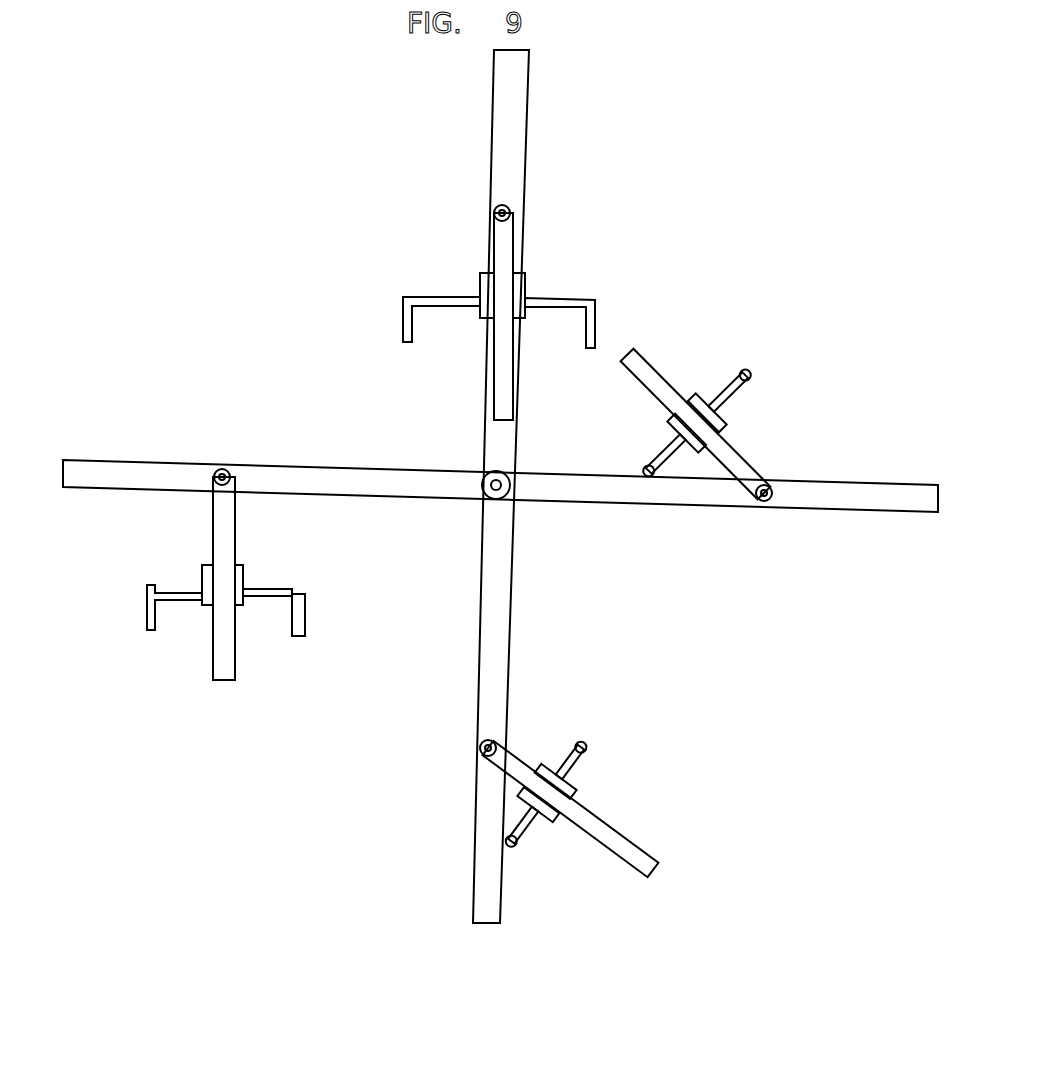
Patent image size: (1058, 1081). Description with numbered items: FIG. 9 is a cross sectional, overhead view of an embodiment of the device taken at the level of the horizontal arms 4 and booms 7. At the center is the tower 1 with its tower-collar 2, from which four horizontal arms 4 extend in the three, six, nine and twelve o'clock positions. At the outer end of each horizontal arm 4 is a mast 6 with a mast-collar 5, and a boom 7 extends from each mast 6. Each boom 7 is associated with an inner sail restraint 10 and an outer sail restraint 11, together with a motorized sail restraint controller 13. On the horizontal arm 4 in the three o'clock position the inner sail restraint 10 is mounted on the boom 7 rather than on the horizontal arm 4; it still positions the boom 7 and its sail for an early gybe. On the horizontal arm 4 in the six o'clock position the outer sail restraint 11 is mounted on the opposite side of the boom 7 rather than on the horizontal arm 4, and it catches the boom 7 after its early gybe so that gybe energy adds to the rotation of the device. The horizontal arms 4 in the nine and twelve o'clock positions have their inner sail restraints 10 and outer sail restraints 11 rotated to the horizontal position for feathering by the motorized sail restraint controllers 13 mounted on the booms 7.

The tower 1 is at (508, 490).
The tower-collar 2 is at (512, 482).
The horizontal arm 4 is at (527, 100).
The mast-collar 5 is at (498, 205).
The mast 6 is at (503, 205).
The boom 7 is at (513, 230).
The inner sail restraint 10 is at (597, 313).
The outer sail restraint 11 is at (403, 330).
The motorized sail restraint controller 13 is at (480, 283).